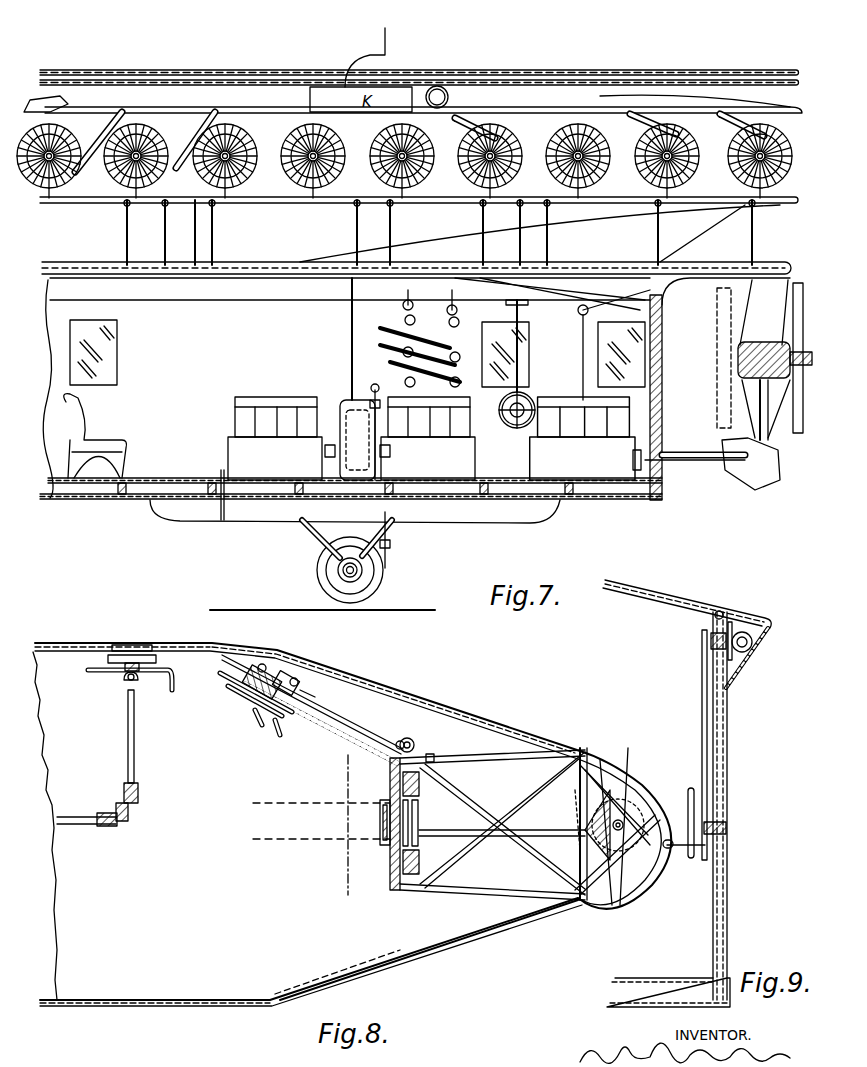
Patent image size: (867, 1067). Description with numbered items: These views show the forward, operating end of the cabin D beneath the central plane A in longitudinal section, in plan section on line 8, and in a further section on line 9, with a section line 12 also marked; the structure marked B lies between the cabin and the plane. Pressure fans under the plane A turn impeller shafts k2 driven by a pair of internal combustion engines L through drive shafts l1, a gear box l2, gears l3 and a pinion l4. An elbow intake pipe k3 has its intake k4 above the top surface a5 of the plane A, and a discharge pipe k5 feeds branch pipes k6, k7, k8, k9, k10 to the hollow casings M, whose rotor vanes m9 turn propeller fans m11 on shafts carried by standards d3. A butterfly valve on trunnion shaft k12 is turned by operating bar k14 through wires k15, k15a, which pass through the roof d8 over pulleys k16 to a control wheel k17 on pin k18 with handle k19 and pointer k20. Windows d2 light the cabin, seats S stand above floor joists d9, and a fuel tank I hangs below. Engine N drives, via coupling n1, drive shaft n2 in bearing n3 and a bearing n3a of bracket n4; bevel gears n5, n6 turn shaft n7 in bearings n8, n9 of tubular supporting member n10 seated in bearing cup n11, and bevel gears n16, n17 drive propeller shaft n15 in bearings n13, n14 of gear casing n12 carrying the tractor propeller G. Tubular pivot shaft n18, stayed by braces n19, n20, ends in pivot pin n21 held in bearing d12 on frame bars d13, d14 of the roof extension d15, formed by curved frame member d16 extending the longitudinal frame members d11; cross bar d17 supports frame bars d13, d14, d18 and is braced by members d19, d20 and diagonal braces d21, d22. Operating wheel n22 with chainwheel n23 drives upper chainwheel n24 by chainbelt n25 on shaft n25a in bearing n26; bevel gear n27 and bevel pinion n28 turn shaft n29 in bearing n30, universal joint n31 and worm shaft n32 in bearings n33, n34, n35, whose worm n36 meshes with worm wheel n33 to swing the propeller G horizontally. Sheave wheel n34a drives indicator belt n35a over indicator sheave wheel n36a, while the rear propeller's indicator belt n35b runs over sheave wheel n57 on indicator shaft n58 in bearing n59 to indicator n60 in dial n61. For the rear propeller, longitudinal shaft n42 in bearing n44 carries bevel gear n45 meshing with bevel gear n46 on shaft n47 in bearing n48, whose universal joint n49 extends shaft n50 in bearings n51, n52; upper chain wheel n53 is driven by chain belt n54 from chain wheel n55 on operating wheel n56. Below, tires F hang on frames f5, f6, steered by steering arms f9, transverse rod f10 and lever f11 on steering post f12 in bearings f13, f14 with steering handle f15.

In FIG. 7, the central plane A is at (172, 70).
In FIG. 7, the lower deck frame B is at (425, 223).
In FIG. 7, the cabin D is at (206, 363).
In FIG. 8, the cabin D is at (184, 888).
In FIG. 9, the cabin D is at (690, 975).
In FIG. 7, the seats S is at (110, 422).
In FIG. 7, the internal combustion engines L is at (351, 438).
In FIG. 7, the internal combustion engine N is at (582, 438).
In FIG. 7, the hollow casing M is at (62, 190).
In FIG. 7, the tires F is at (316, 572).
In FIG. 7, the fuel tank I is at (540, 508).
In FIG. 7, the tractor propeller G is at (804, 439).
In FIG. 7, the section line 8— 8 is at (795, 272).
In FIG. 8, the section line 9— 9 is at (345, 670).
In FIG. 8, the section line 12 is at (342, 765).
In FIG. 7, the impeller shaft k2 is at (358, 236).
In FIG. 7, the intake pipe k3 is at (356, 54).
In FIG. 7, the intake k4 is at (388, 40).
In FIG. 7, the discharge pipe k5 is at (245, 96).
In FIG. 7, the branch pipe k6 is at (38, 100).
In FIG. 7, the branch pipe k7 is at (92, 145).
In FIG. 7, the branch pipe k8 is at (178, 145).
In FIG. 7, the branch pipe k9 is at (450, 180).
In FIG. 7, the branch pipe k10 is at (358, 181).
In FIG. 7, the trunnion shaft k12 is at (180, 98).
In FIG. 7, the operating bar k14 is at (192, 100).
In FIG. 7, the wire k15 is at (380, 345).
In FIG. 7, the wire k15a is at (387, 237).
In FIG. 7, the pulleys k16 is at (192, 275).
In FIG. 7, the control wheel k17 is at (420, 345).
In FIG. 7, the pin k18 is at (431, 322).
In FIG. 7, the operating handle k19 is at (435, 388).
In FIG. 7, the pointer k20 is at (439, 312).
In FIG. 7, the top surface a5 is at (405, 70).
In FIG. 7, the vanes m9 is at (410, 170).
In FIG. 7, the propeller fan m11 is at (118, 188).
In FIG. 7, the windows d2 is at (118, 360).
In FIG. 7, the standards d3 is at (125, 228).
In FIG. 7, the roof d8 is at (272, 262).
In FIG. 7, the floor joists d9 is at (128, 488).
In FIG. 8, the longitudinal cabin frame members d11 is at (258, 650).
In FIG. 7, the bearing d12 is at (768, 275).
In FIG. 8, the bearing d12 is at (615, 820).
In FIG. 8, the frame bar d13 is at (612, 775).
In FIG. 8, the frame bar d14 is at (650, 880).
In FIG. 7, the forward extension d15 is at (738, 268).
In FIG. 8, the forward extension d15 is at (500, 738).
In FIG. 8, the curved frame member d16 is at (535, 736).
In FIG. 9, the curved frame member d16 is at (770, 627).
In FIG. 8, the cross bar d17 is at (578, 750).
In FIG. 8, the frame bar d18 is at (595, 875).
In FIG. 8, the brace member d19 is at (512, 758).
In FIG. 8, the brace member d20 is at (505, 890).
In FIG. 8, the diagonal brace d21 is at (535, 855).
In FIG. 8, the diagonal brace d22 is at (432, 850).
In FIG. 7, the frame f5 is at (310, 530).
In FIG. 7, the frame f6 is at (385, 528).
In FIG. 7, the steering arms f9 is at (378, 590).
In FIG. 7, the transverse rod f10 is at (370, 580).
In FIG. 7, the lever f11 is at (375, 560).
In FIG. 7, the steering post f12 is at (374, 415).
In FIG. 7, the bearing f13 is at (390, 545).
In FIG. 7, the bearing f14 is at (372, 400).
In FIG. 7, the steering handle f15 is at (372, 388).
In FIG. 7, the drive shaft l1 is at (393, 450).
In FIG. 7, the gear box l2 is at (378, 470).
In FIG. 7, the gears l3 is at (340, 462).
In FIG. 7, the pinion l4 is at (345, 414).
In FIG. 7, the coupling n1 is at (637, 450).
In FIG. 7, the drive shaft n2 is at (680, 470).
In FIG. 7, the bearing n3 is at (740, 468).
In FIG. 7, the bearing n3a is at (785, 294).
In FIG. 7, the bracket n4 is at (705, 475).
In FIG. 7, the bevel gear n5 is at (760, 475).
In FIG. 7, the bevel gear n6 is at (778, 462).
In FIG. 7, the shaft n7 is at (752, 420).
In FIG. 7, the bearing n8 is at (718, 428).
In FIG. 7, the bearing n9 is at (745, 380).
In FIG. 7, the tubular supporting member n10 is at (752, 408).
In FIG. 7, the bearing cup n11 is at (801, 454).
In FIG. 7, the propeller gear casing n12 is at (740, 342).
In FIG. 7, the bearing n13 is at (697, 351).
In FIG. 7, the bearing n14 is at (726, 349).
In FIG. 7, the propeller shaft n15 is at (726, 369).
In FIG. 7, the bevel gear n16 is at (785, 370).
In FIG. 7, the bevel gear n17 is at (745, 340).
In FIG. 7, the tubular pivot shaft n18 is at (755, 325).
In FIG. 7, the braces n19 is at (760, 318).
In FIG. 7, the braces n20 is at (752, 398).
In FIG. 7, the pivot pin n21 is at (764, 262).
In FIG. 8, the pivot pin n21 is at (650, 812).
In FIG. 7, the operating wheel n22 is at (575, 384).
In FIG. 8, the operating wheel n22 is at (272, 718).
In FIG. 9, the operating wheel n22 is at (700, 852).
In FIG. 8, the chainwheel n23 is at (262, 710).
In FIG. 9, the chainwheel n23 is at (726, 830).
In FIG. 7, the upper chainwheel n24 is at (600, 306).
In FIG. 8, the upper chainwheel n24 is at (250, 700).
In FIG. 9, the upper chainwheel n24 is at (700, 648).
In FIG. 7, the chainbelt n25 is at (600, 320).
In FIG. 9, the chainbelt n25 is at (705, 776).
In FIG. 8, the shaft n25a is at (238, 690).
In FIG. 9, the shaft n25a is at (710, 640).
In FIG. 8, the bearing n26 is at (220, 682).
In FIG. 9, the bearing n26 is at (716, 612).
In FIG. 8, the bevel gear n27 is at (270, 668).
In FIG. 9, the bevel gear n27 is at (732, 625).
In FIG. 8, the bevel pinion n28 is at (290, 676).
In FIG. 9, the bevel pinion n28 is at (748, 634).
In FIG. 8, the shaft n29 is at (362, 718).
In FIG. 9, the shaft n29 is at (748, 650).
In FIG. 8, the bearing n30 is at (308, 686).
In FIG. 8, the universal joint n31 is at (408, 740).
In FIG. 7, the worm shaft n32 is at (690, 280).
In FIG. 8, the worm shaft n32 is at (475, 780).
In FIG. 7, the worm wheel n33 is at (775, 278).
In FIG. 8, the worm wheel n33 is at (430, 762).
In FIG. 8, the bearing n34 is at (572, 838).
In FIG. 8, the sheave wheel n34a is at (648, 850).
In FIG. 8, the bearing n35 is at (612, 885).
In FIG. 8, the indicator belt n35a is at (540, 840).
In FIG. 8, the indicator belt n35b is at (290, 839).
In FIG. 8, the worm n36 is at (580, 895).
In FIG. 8, the indicator sheave wheel n36a is at (418, 822).
In FIG. 8, the longitudinal shaft n42 is at (72, 828).
In FIG. 8, the bearing n44 is at (100, 830).
In FIG. 8, the bevel gear n45 is at (130, 825).
In FIG. 8, the bevel gear n46 is at (140, 805).
In FIG. 8, the shaft n47 is at (136, 758).
In FIG. 8, the bearing n48 is at (140, 792).
In FIG. 8, the universal joint n49 is at (126, 690).
In FIG. 8, the shaft n50 is at (125, 680).
In FIG. 7, the bearing n51 is at (520, 306).
In FIG. 8, the bearing n51 is at (124, 676).
In FIG. 8, the bearing n52 is at (128, 645).
In FIG. 7, the upper chain wheel n53 is at (522, 320).
In FIG. 8, the upper chain wheel n53 is at (140, 650).
In FIG. 7, the chain belt n54 is at (520, 360).
In FIG. 8, the chain belt n54 is at (150, 652).
In FIG. 7, the chain wheel n55 is at (510, 430).
In FIG. 8, the chain wheel n55 is at (118, 650).
In FIG. 7, the operating wheel n56 is at (508, 416).
In FIG. 8, the operating wheel n56 is at (95, 670).
In FIG. 8, the sheave wheel n57 is at (385, 800).
In FIG. 8, the indicator shaft n58 is at (388, 807).
In FIG. 8, the bearing n59 is at (385, 826).
In FIG. 8, the indicator n60 is at (385, 845).
In FIG. 8, the dial n61 is at (392, 862).